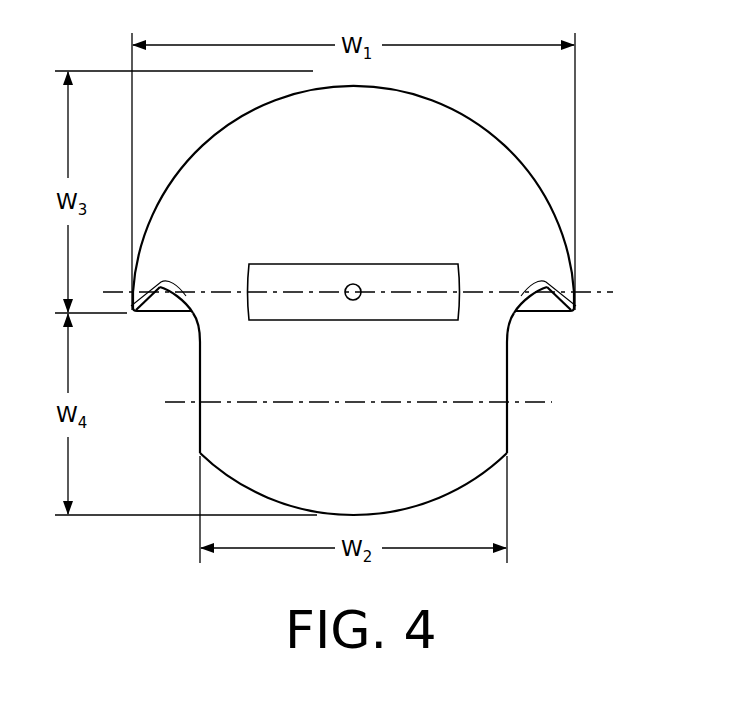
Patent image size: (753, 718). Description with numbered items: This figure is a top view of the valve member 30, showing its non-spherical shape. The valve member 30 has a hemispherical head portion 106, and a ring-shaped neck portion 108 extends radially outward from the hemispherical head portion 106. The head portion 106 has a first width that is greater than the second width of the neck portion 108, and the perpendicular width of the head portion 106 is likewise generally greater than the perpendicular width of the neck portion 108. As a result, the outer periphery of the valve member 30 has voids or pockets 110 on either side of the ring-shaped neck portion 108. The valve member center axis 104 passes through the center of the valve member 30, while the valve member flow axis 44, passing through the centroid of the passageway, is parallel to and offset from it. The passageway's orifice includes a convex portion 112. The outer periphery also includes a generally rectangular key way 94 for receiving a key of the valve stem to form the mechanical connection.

The valve member 30 is at (376, 297).
The hemispherical head portion 106 is at (517, 142).
The valve member center axis 104 is at (602, 292).
The convex portion 112 is at (163, 304).
The voids or pockets 110 is at (160, 380).
The valve member flow axis 44 is at (530, 404).
The ring-shaped neck portion 108 is at (495, 436).
The key way 94 is at (280, 312).